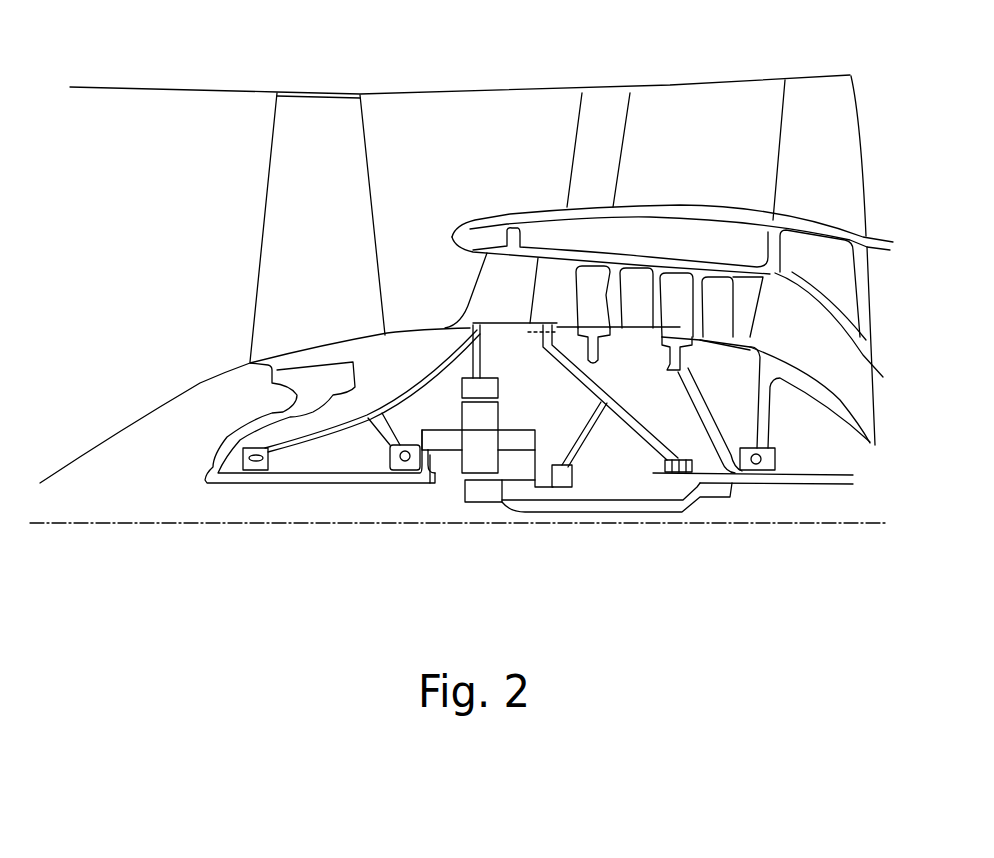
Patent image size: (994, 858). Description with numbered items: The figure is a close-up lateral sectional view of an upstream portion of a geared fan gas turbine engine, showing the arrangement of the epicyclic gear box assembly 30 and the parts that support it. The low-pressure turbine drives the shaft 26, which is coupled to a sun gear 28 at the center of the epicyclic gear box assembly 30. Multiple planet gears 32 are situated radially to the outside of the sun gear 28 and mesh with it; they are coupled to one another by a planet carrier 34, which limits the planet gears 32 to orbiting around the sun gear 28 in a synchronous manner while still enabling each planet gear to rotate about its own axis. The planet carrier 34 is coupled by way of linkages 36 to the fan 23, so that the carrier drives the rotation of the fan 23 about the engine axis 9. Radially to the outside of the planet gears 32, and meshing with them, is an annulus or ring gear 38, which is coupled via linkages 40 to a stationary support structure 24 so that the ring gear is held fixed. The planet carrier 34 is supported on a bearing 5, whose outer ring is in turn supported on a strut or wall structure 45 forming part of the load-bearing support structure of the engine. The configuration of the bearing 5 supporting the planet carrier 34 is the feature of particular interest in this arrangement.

The fan 23 is at (280, 232).
The stationary support structure 24 is at (490, 286).
The linkages 40 is at (483, 367).
The annulus or ring gear 38 is at (462, 390).
The strut or wall structure 45 is at (585, 441).
The engine axis 9 is at (238, 525).
The linkages 36 is at (433, 462).
The epicyclic gear box assembly 30 is at (430, 500).
The planet gears 32 is at (467, 458).
The sun gear 28 is at (483, 492).
The planet carrier 34 is at (523, 478).
The bearing 5 is at (573, 487).
The shaft 26 is at (640, 508).